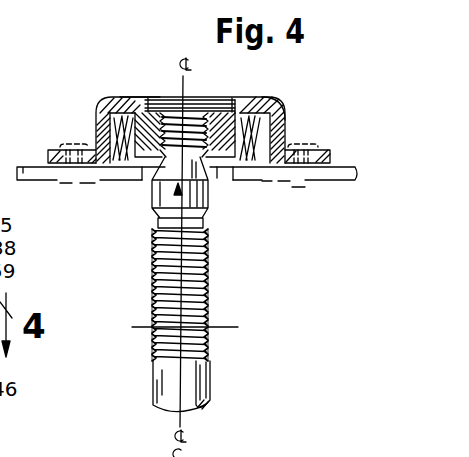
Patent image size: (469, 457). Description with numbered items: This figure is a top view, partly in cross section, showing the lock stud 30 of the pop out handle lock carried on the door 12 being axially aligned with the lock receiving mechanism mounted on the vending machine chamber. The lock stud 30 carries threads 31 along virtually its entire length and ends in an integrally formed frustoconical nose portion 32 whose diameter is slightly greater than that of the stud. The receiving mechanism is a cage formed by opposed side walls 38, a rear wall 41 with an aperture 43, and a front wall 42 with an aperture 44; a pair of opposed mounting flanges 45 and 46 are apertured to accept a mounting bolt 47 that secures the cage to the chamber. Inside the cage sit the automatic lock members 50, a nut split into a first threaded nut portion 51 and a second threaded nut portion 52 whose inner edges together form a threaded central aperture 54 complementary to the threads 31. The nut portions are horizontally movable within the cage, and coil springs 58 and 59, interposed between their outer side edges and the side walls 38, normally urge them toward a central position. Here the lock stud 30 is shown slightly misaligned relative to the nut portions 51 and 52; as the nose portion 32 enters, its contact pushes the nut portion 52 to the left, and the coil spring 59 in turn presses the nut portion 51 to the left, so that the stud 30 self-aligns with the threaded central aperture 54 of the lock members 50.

The door 12 is at (330, 178).
The lock stud 30 is at (210, 383).
The threads 31 is at (210, 296).
The nose portion 32 is at (160, 193).
The side walls 38 is at (97, 124).
The rear wall 41 is at (127, 97).
The front wall 42 is at (128, 182).
The aperture 43 is at (155, 97).
The aperture 44 is at (217, 173).
The mounting flange 45 is at (48, 162).
The mounting flange 46 is at (332, 163).
The mounting bolt 47 is at (72, 197).
The automatic lock members 50 is at (243, 173).
The first threaded nut portion 51 is at (243, 99).
The second threaded nut portion 52 is at (142, 113).
The threaded central aperture 54 is at (198, 100).
The coil spring 58 is at (112, 116).
The coil spring 59 is at (272, 101).